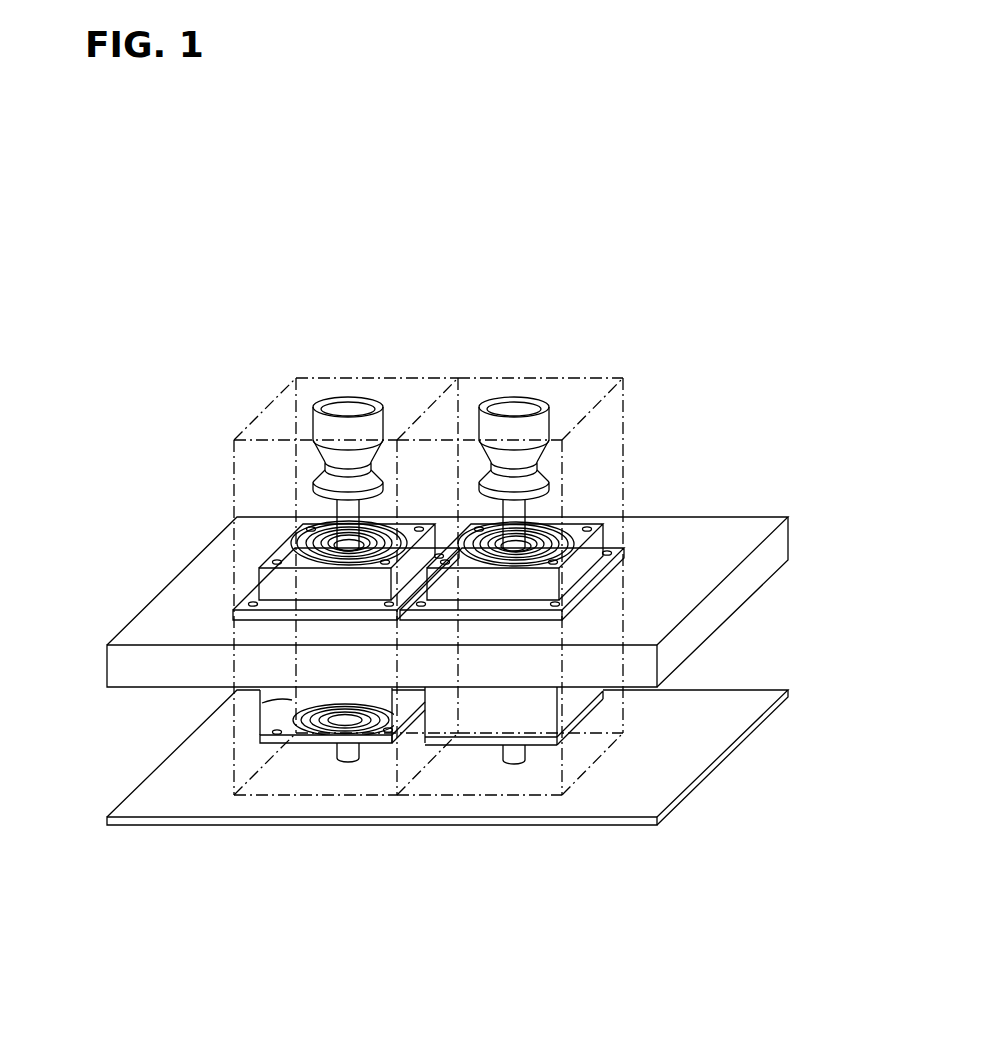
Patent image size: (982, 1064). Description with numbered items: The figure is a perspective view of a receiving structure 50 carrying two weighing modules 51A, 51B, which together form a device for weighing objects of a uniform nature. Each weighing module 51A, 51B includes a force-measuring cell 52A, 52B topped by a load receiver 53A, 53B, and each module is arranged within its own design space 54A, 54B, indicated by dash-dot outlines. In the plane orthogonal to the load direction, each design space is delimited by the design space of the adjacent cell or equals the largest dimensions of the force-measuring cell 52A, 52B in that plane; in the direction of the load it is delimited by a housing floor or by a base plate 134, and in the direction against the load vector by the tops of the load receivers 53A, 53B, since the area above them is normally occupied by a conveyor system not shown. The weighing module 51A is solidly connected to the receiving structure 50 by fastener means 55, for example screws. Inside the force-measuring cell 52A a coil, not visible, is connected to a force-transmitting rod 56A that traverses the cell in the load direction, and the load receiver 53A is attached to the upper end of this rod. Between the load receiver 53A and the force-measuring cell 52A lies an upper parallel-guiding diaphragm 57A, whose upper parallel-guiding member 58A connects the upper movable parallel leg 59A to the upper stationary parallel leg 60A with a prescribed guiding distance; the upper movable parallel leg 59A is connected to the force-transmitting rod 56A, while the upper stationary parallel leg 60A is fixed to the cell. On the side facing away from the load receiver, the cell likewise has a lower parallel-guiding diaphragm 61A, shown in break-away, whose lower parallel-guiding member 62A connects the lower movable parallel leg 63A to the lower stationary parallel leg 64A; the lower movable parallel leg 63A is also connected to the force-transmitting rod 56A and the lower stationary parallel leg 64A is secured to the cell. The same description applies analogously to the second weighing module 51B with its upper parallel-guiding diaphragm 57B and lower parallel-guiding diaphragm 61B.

The receiving structure 50 is at (697, 547).
The base plate 134 is at (683, 733).
The weighing module 51A is at (249, 431).
The weighing module 51B is at (526, 431).
The force-measuring cell 52A is at (378, 698).
The force-measuring cell 52B is at (510, 705).
The load receiver 53A is at (355, 430).
The load receiver 53B is at (518, 430).
The design space 54A is at (308, 393).
The design space 54B is at (585, 397).
The fastener means 55 is at (244, 598).
The force-transmitting rod 56A is at (347, 524).
The upper parallel-guiding diaphragm 57A is at (387, 505).
The upper parallel-guiding diaphragm 57B is at (593, 475).
The upper parallel-guiding member 58A is at (292, 542).
The upper movable parallel leg 59A is at (307, 523).
The upper stationary parallel leg 60A is at (276, 553).
The lower parallel-guiding diaphragm 61A is at (232, 733).
The lower parallel-guiding diaphragm 61B is at (545, 796).
The lower parallel-guiding member 62A is at (300, 733).
The lower movable parallel leg 63A is at (298, 706).
The lower stationary parallel leg 64A is at (296, 736).